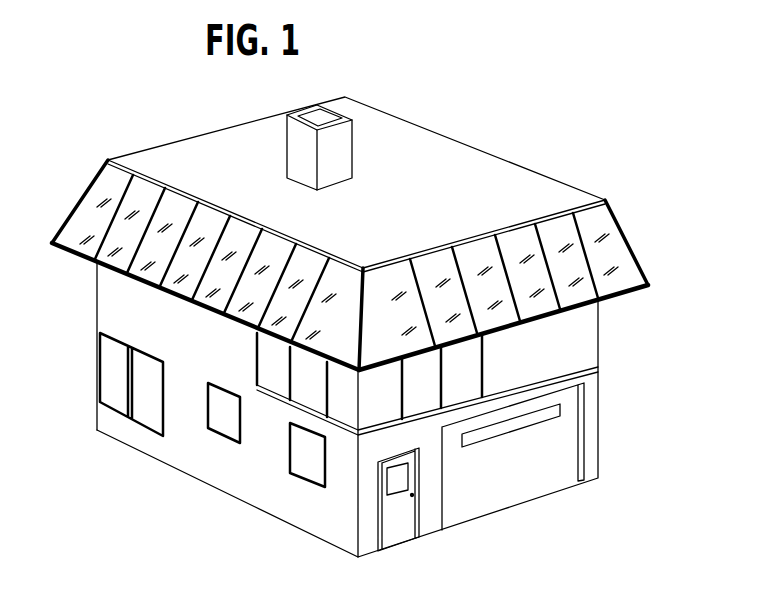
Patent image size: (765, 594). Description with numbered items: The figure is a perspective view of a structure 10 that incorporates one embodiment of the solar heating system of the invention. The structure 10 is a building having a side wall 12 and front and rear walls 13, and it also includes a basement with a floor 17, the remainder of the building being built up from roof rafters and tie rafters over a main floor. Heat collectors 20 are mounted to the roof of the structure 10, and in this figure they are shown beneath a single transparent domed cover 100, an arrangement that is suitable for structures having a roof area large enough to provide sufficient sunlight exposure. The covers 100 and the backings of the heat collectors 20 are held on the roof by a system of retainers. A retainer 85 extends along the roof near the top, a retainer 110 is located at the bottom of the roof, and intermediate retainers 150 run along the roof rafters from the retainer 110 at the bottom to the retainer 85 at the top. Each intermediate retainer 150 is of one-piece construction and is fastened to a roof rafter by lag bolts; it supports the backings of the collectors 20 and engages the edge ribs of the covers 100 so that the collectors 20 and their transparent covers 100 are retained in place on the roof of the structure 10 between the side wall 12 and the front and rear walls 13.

The structure 10 is at (550, 127).
The side wall 12 is at (587, 357).
The front and rear walls 13 is at (233, 462).
The basement floor 17 is at (178, 468).
The heat collectors 20 is at (183, 210).
The retainer 85 is at (85, 200).
The transparent domed cover 100 is at (90, 236).
The retainer 110 is at (130, 273).
The intermediate retainer 150 is at (128, 172).